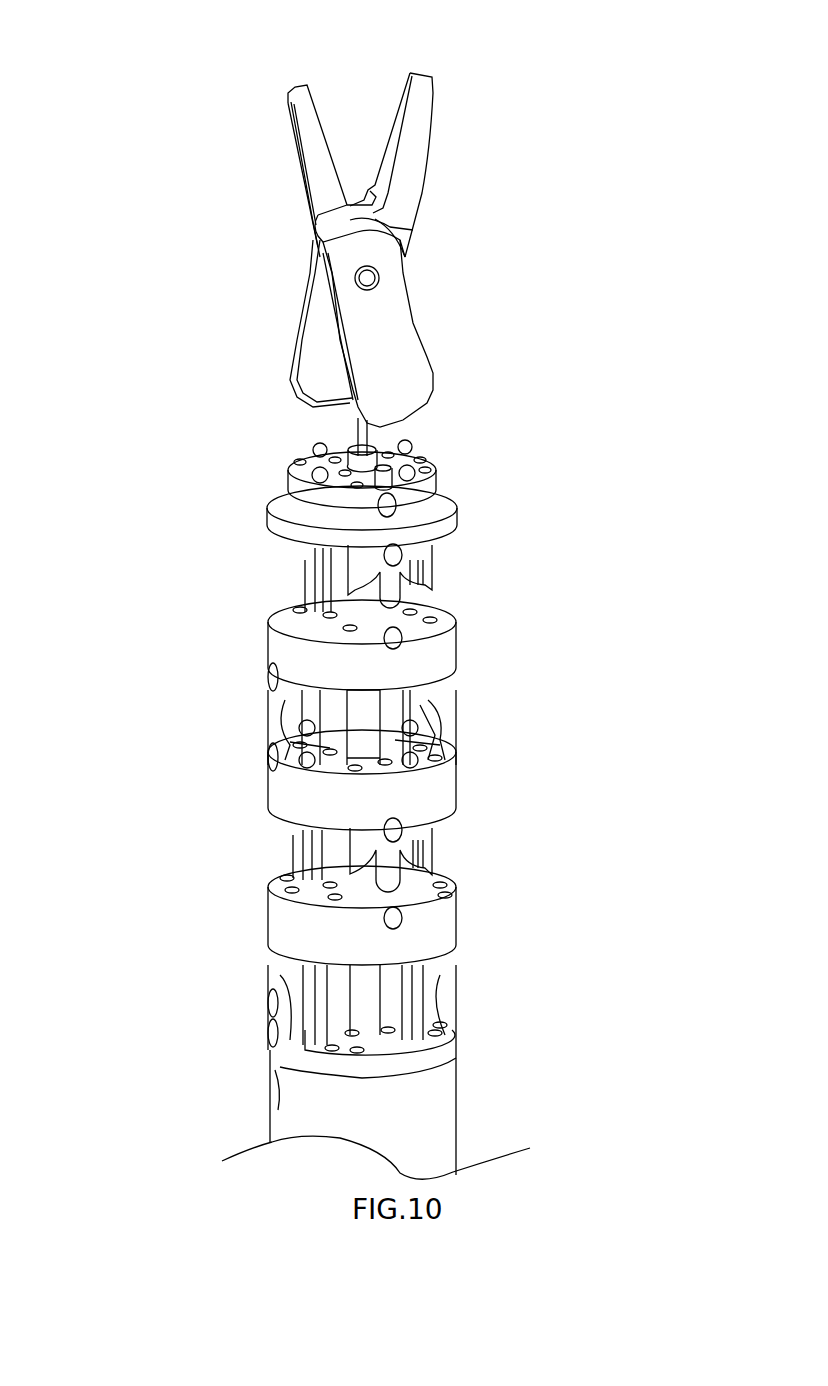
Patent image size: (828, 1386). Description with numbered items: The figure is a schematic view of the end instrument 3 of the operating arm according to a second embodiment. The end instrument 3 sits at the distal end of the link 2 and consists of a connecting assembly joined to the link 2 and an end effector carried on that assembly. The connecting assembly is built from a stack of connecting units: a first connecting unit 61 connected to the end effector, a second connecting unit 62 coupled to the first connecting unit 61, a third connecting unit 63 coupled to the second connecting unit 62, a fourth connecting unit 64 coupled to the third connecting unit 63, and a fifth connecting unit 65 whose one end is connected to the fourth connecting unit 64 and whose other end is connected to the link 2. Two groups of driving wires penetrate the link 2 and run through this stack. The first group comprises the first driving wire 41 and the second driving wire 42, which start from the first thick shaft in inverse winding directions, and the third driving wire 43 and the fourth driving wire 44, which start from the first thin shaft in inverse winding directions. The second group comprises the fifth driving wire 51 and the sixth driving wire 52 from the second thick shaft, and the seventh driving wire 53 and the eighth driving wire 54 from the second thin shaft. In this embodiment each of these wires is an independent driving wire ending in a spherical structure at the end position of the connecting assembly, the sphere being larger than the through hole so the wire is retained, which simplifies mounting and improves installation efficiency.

The end instrument 3 is at (405, 44).
The link 2 is at (433, 1142).
The first driving wire 41 is at (407, 443).
The second driving wire 42 is at (300, 462).
The third driving wire 43 is at (405, 720).
The fourth driving wire 44 is at (303, 872).
The fifth driving wire 51 is at (412, 470).
The sixth driving wire 52 is at (317, 447).
The seventh driving wire 53 is at (432, 840).
The eighth driving wire 54 is at (305, 725).
The first connecting unit 61 is at (440, 510).
The second connecting unit 62 is at (443, 648).
The third connecting unit 63 is at (435, 790).
The fourth connecting unit 64 is at (435, 930).
The fifth connecting unit 65 is at (433, 1058).